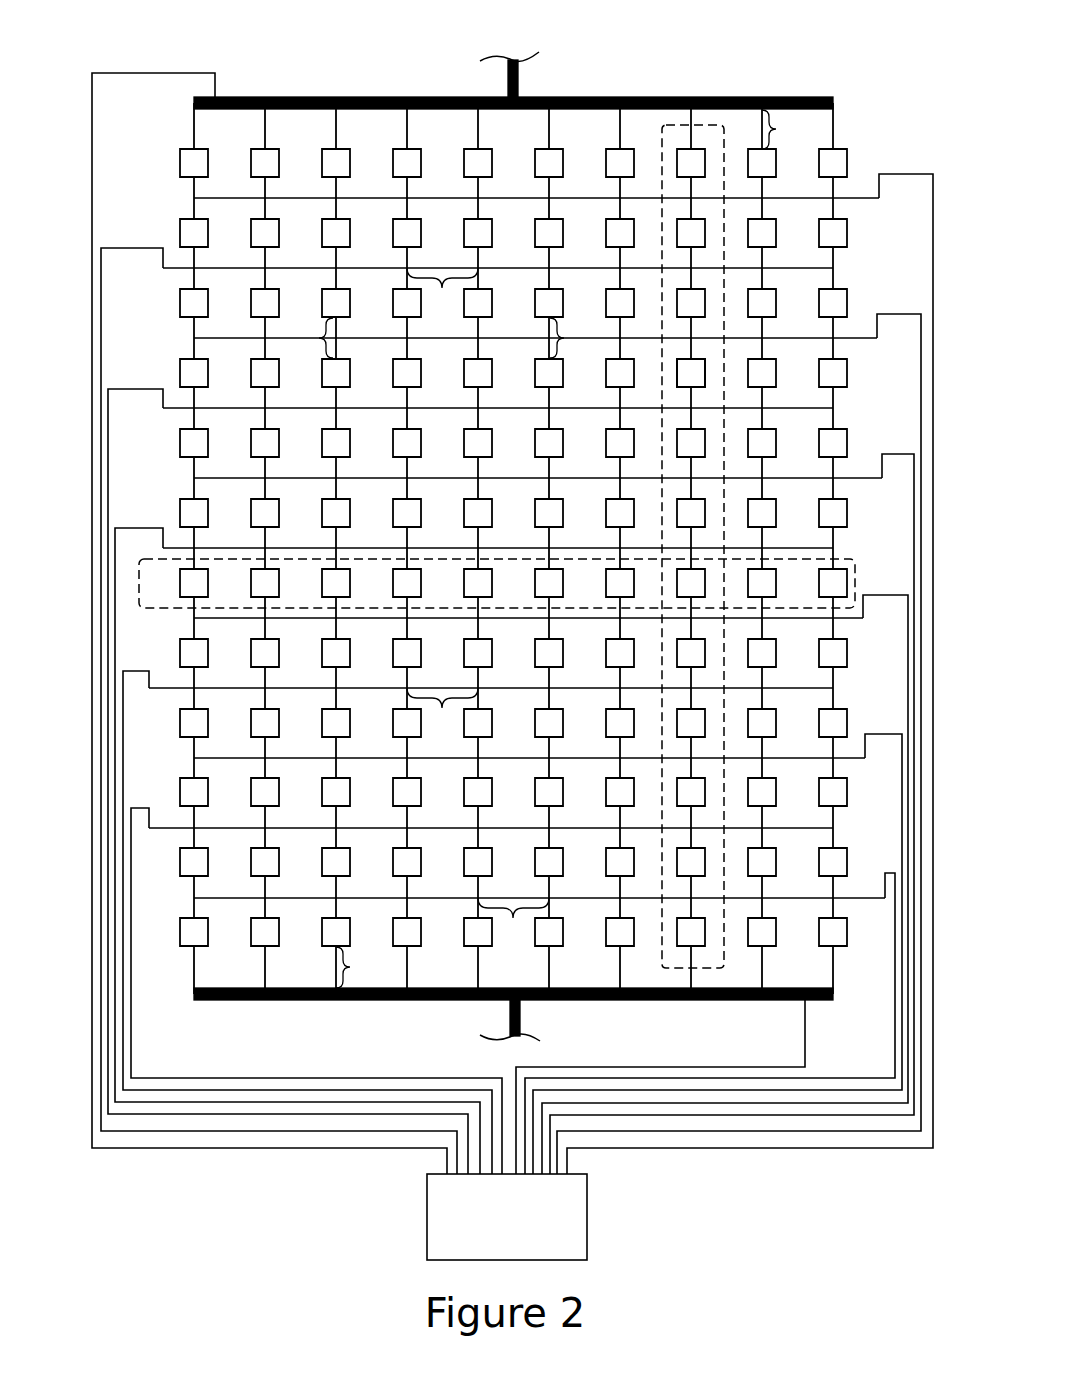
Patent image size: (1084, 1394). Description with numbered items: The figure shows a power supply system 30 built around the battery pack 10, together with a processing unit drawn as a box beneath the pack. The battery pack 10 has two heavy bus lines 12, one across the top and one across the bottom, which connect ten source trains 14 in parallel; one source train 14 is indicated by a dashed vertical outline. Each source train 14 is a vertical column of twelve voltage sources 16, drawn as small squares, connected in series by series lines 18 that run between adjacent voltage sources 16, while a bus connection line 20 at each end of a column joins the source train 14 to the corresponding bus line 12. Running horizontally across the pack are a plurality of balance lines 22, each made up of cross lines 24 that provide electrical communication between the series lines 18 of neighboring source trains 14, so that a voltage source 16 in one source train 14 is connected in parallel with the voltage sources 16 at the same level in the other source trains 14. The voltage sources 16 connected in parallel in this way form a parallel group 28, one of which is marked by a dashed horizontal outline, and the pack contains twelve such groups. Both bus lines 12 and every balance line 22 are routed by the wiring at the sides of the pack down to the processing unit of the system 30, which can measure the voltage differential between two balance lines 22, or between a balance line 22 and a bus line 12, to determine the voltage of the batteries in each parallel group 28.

The battery pack 10 is at (662, 62).
The bus line 12 is at (312, 97).
The source train 14 is at (705, 380).
The voltage source 16 is at (350, 234).
The series line 18 is at (442, 338).
The bus connection line 20 is at (573, 549).
The balance line 22 is at (359, 407).
The cross line 24 is at (478, 607).
The parallel group 28 is at (833, 558).
The power supply system 30 is at (303, 1192).